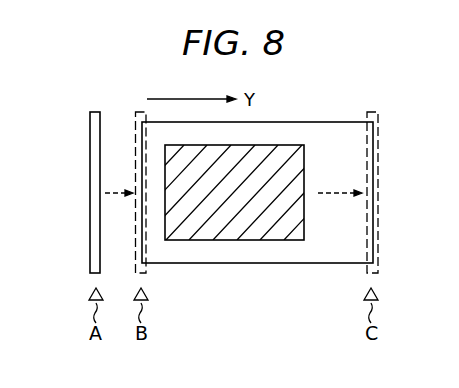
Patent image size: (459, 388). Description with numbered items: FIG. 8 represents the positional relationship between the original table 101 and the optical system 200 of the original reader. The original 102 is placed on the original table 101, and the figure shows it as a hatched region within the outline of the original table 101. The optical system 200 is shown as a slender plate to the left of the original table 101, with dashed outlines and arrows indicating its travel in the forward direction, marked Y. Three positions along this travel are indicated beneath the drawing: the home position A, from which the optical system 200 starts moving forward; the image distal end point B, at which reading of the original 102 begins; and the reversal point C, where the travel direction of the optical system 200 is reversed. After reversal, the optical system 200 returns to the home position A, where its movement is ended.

The original table 101 is at (327, 122).
The original 102 is at (298, 226).
The optical system 200 is at (90, 246).